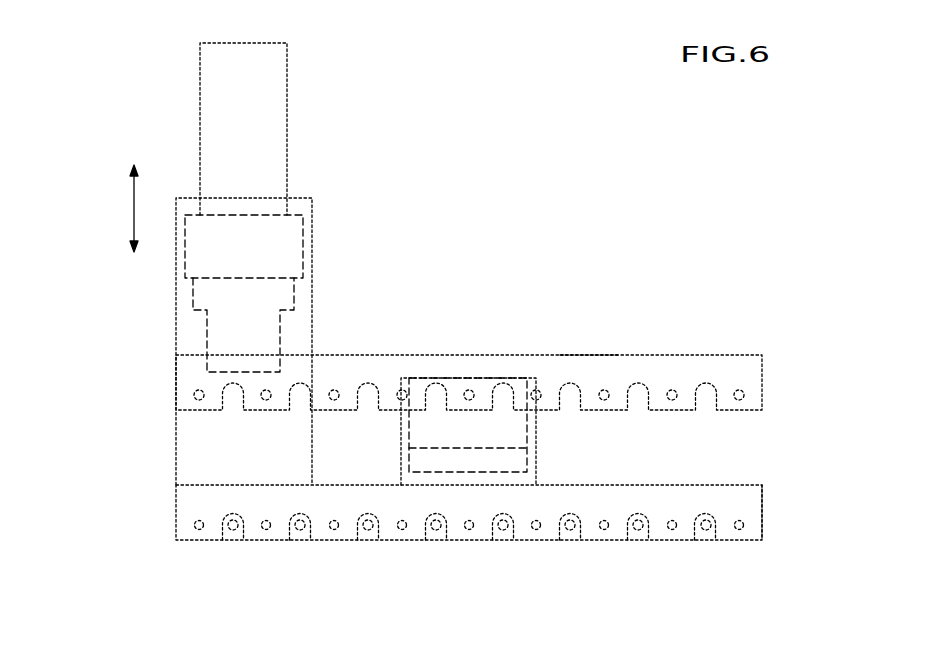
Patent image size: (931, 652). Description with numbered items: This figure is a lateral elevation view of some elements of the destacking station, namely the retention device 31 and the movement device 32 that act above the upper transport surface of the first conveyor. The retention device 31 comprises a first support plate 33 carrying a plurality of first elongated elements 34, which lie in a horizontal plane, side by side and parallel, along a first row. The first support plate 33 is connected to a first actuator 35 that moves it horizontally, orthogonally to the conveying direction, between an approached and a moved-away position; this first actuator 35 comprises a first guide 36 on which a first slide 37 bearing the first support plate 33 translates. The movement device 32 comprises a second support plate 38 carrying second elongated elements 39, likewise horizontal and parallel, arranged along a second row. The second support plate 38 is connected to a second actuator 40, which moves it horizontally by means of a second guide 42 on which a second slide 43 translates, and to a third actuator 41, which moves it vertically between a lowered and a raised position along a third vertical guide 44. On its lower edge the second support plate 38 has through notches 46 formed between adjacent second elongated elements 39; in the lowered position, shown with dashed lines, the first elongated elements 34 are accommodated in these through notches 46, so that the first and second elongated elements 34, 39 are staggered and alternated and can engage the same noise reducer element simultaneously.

The retention device 31 is at (780, 485).
The movement device 32 is at (778, 348).
The first support plate 33 is at (762, 518).
The first elongated elements 34 is at (367, 531).
The first actuator 35 is at (553, 431).
The first guide 36 is at (518, 463).
The first slide 37 is at (457, 432).
The second support plate 38 is at (592, 354).
The second elongated elements 39 is at (400, 390).
The second actuator 40 is at (312, 240).
The third actuator 41 is at (292, 107).
The second guide 42 is at (195, 301).
The second slide 43 is at (256, 215).
The third vertical guide 44 is at (234, 113).
The through notches 46 is at (302, 388).